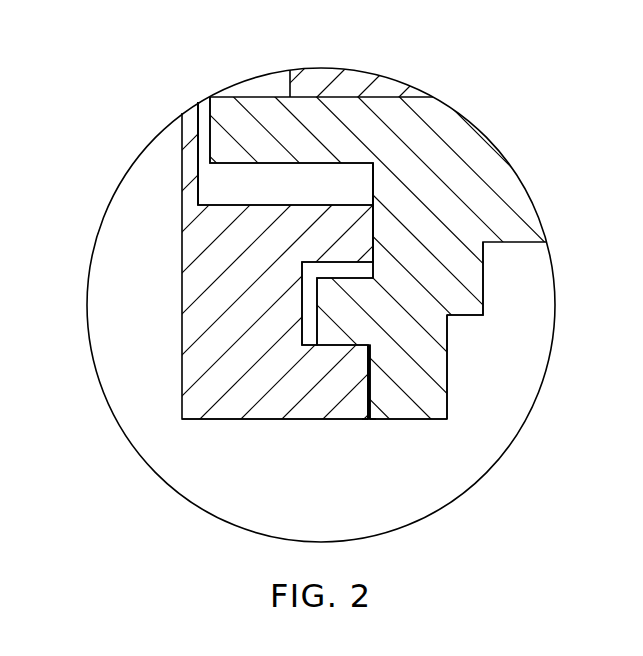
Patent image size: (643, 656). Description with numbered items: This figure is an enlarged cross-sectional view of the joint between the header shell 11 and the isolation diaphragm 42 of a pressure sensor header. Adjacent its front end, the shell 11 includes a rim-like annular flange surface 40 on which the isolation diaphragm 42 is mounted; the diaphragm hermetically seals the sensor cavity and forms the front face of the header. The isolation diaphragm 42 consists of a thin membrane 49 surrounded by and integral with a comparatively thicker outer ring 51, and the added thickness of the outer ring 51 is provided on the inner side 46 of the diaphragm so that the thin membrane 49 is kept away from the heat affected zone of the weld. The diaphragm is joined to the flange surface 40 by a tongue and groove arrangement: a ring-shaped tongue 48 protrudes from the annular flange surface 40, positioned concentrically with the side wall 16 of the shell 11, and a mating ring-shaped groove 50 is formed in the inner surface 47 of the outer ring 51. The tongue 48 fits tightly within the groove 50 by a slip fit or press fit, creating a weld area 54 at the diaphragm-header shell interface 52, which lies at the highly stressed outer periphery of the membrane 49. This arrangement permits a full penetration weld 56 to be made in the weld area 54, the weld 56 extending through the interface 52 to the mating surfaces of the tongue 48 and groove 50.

The shell 11 is at (485, 275).
The side wall 16 is at (417, 420).
The annular flange surface 40 is at (392, 419).
The isolation diaphragm 42 is at (182, 317).
The inner side 46 is at (219, 184).
The inner surface 47 is at (376, 222).
The tongue 48 is at (355, 328).
The thin membrane 49 is at (188, 162).
The groove 50 is at (308, 327).
The outer ring 51 is at (233, 407).
The diaphragm-header shell interface 52 is at (368, 430).
The weld area 54 is at (362, 403).
The full penetration weld 56 is at (365, 365).